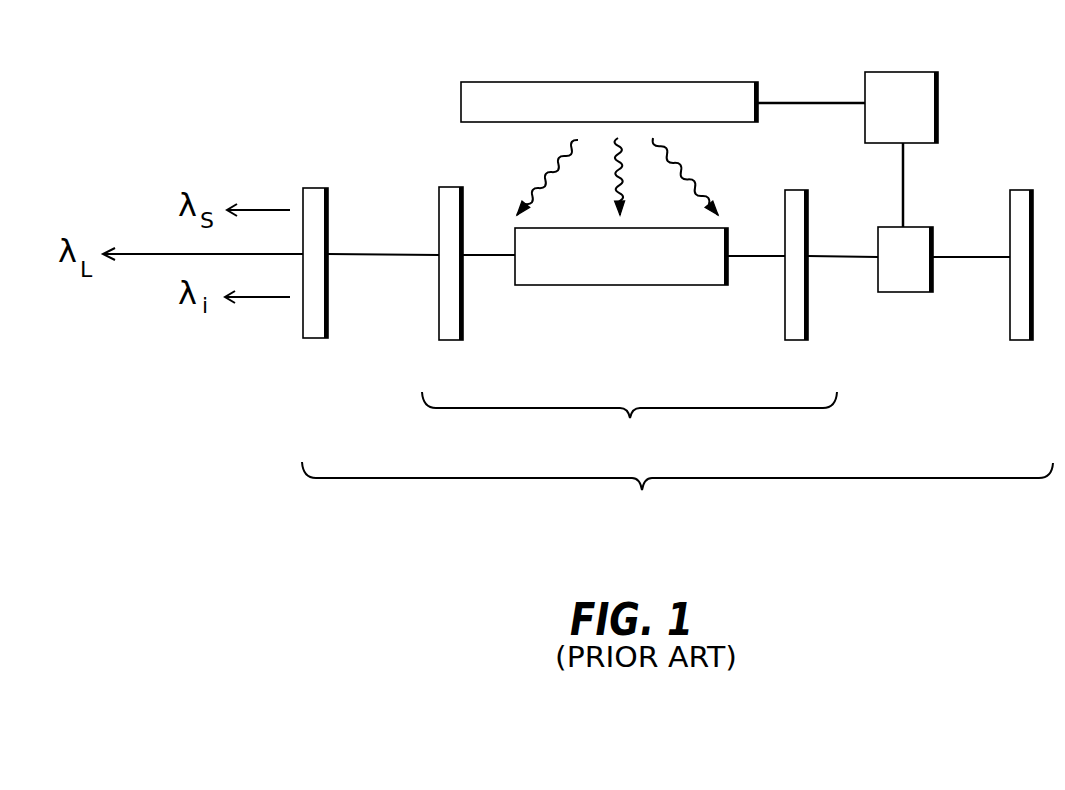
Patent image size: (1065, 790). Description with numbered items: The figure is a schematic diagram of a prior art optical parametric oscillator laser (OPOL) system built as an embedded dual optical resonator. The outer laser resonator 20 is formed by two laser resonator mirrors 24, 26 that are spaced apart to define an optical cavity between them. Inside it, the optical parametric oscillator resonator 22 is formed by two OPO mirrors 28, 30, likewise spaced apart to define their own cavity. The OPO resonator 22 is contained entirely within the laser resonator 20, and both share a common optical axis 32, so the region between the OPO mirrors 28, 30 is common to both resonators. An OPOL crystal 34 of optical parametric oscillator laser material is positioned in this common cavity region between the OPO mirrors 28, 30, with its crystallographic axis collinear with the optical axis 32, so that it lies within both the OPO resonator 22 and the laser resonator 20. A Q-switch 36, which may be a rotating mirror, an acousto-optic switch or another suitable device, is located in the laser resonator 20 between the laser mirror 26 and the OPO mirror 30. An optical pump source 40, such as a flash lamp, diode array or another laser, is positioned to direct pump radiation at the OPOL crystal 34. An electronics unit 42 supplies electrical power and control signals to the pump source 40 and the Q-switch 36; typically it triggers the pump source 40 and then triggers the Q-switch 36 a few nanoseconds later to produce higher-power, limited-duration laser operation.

The laser resonator 20 is at (677, 495).
The optical parametric oscillator resonator 22 is at (629, 423).
The laser resonator mirror 24 is at (317, 188).
The laser resonator mirror 26 is at (1022, 190).
The OPO mirror 28 is at (452, 186).
The OPO mirror 30 is at (800, 190).
The optical axis 32 is at (390, 255).
The OPOL crystal 34 is at (570, 287).
The Q-switch 36 is at (907, 292).
The optical pump source 40 is at (567, 82).
The electronics unit 42 is at (913, 72).